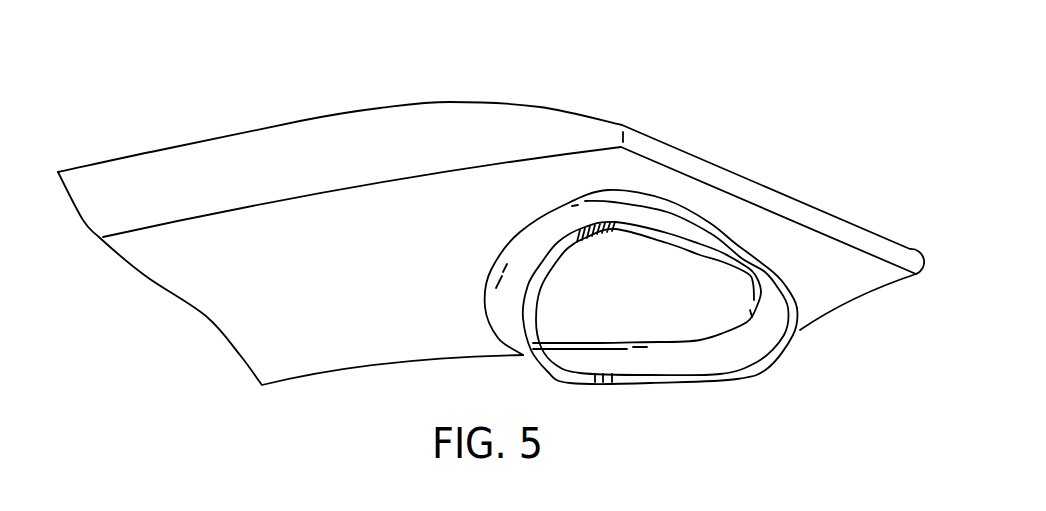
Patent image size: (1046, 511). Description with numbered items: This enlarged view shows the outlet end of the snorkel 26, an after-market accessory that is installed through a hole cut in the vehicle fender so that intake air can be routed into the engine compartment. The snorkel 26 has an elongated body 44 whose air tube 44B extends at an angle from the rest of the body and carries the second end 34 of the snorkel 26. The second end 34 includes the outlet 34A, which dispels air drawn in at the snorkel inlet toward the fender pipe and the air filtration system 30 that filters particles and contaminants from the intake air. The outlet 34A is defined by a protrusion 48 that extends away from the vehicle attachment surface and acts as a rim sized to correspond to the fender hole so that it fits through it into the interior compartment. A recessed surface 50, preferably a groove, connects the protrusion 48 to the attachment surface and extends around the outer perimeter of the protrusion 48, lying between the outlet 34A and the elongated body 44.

The snorkel 26 is at (606, 42).
The elongated body 44 is at (123, 126).
The air tube 44B is at (227, 133).
The second end 34 is at (772, 180).
The outlet 34A is at (680, 357).
The air filtration system 30 is at (543, 243).
The protrusion 48 is at (728, 262).
The recessed surface 50 is at (775, 353).